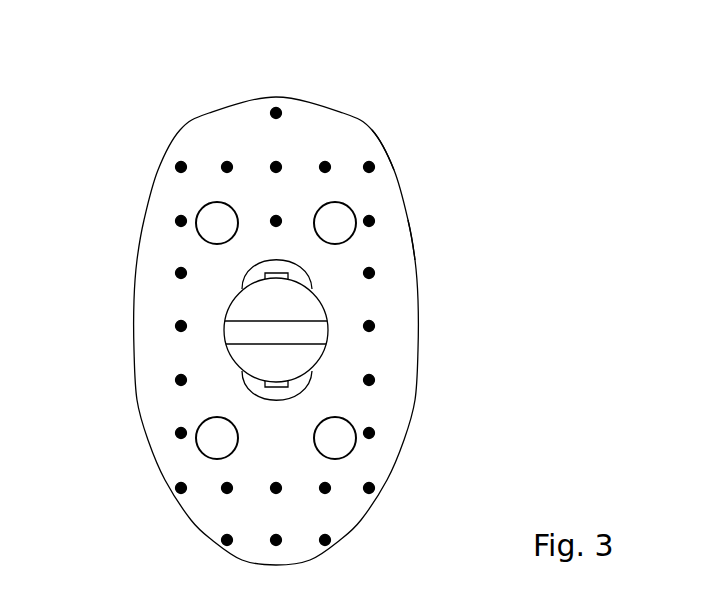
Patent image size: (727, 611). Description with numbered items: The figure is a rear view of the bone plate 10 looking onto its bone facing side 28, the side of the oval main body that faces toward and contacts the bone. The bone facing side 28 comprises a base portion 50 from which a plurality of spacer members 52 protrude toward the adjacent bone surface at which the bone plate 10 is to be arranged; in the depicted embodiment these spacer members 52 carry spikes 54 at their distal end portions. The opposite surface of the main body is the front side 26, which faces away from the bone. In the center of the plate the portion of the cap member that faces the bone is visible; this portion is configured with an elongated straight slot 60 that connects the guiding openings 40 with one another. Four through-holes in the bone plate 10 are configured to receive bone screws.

The bone plate 10 is at (378, 111).
The spacer members 52 is at (385, 146).
The spikes 54 is at (369, 166).
The bone facing side 28 is at (395, 243).
The base portion 50 is at (390, 283).
The guiding openings 40 is at (223, 332).
The elongated straight slot 60 is at (312, 329).
The front side 26 is at (300, 367).